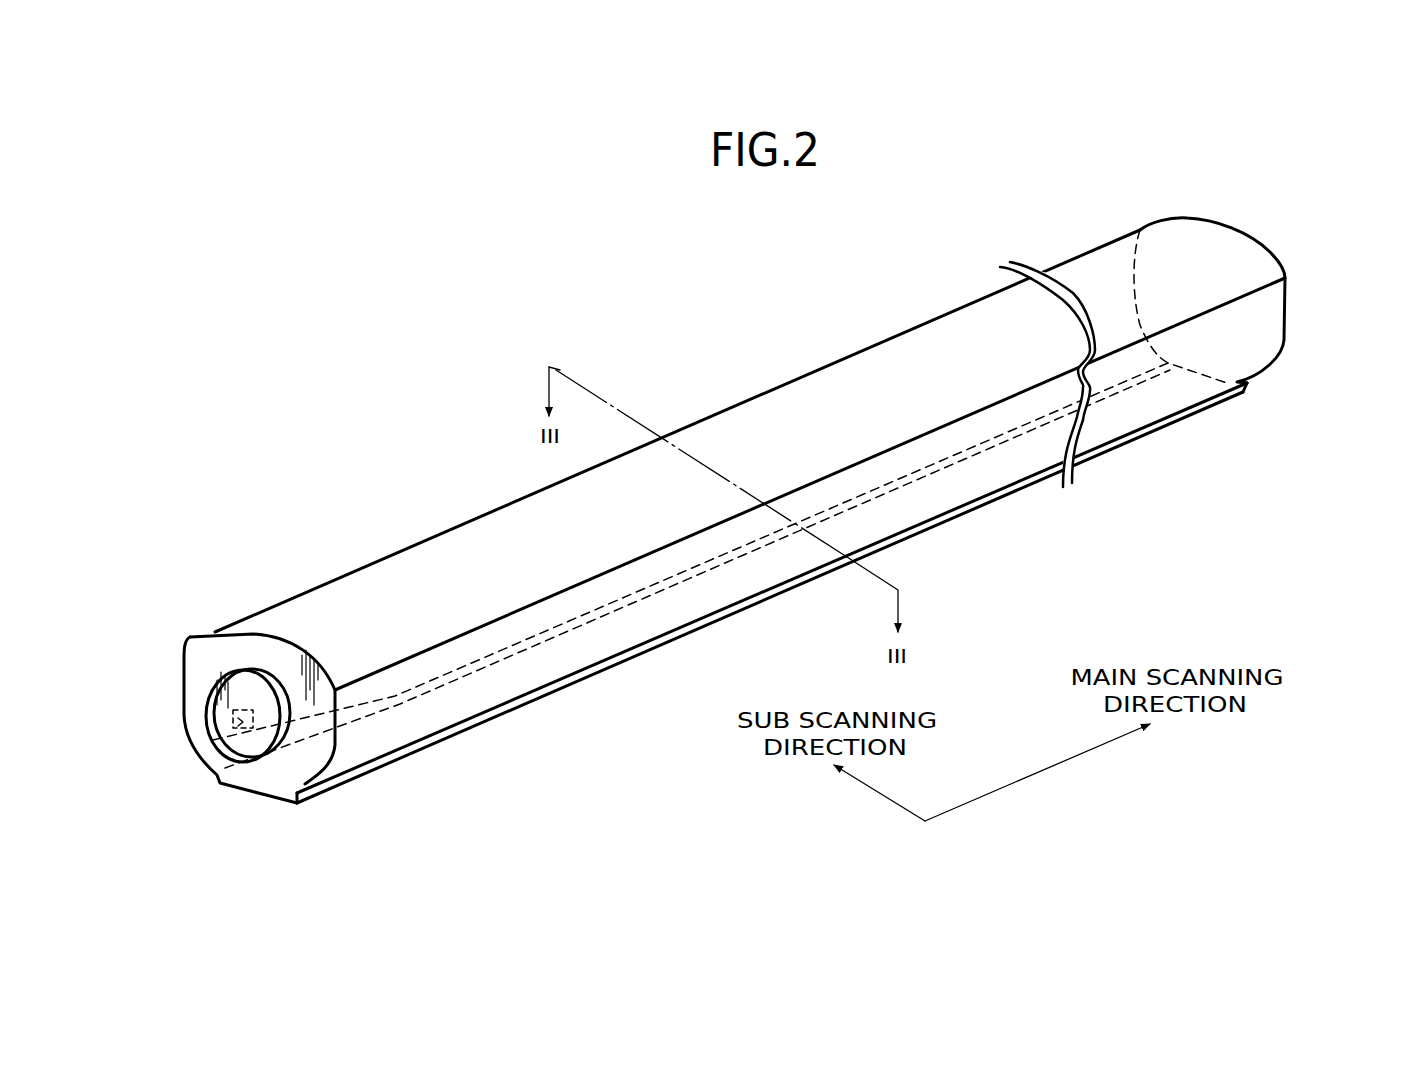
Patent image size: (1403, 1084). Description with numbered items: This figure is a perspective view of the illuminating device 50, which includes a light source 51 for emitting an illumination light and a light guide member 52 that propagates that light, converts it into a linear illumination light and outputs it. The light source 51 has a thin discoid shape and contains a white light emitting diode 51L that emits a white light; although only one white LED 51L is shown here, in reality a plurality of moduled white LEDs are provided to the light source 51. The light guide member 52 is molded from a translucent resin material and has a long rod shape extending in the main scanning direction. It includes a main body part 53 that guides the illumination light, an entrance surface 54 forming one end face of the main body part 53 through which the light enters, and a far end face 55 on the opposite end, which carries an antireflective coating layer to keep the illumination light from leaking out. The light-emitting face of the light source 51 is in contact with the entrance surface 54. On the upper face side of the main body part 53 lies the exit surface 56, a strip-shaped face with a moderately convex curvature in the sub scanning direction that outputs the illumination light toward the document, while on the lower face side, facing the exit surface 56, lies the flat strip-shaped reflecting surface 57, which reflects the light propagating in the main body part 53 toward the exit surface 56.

The illuminating device 50 is at (735, 541).
The light source 51 is at (237, 668).
The white light emitting diode 51L is at (233, 732).
The light guide member 52 is at (742, 396).
The main body part 53 is at (660, 566).
The entrance surface 54 is at (280, 777).
The far end face 55 is at (1257, 240).
The exit surface 56 is at (425, 568).
The reflecting surface 57 is at (538, 663).